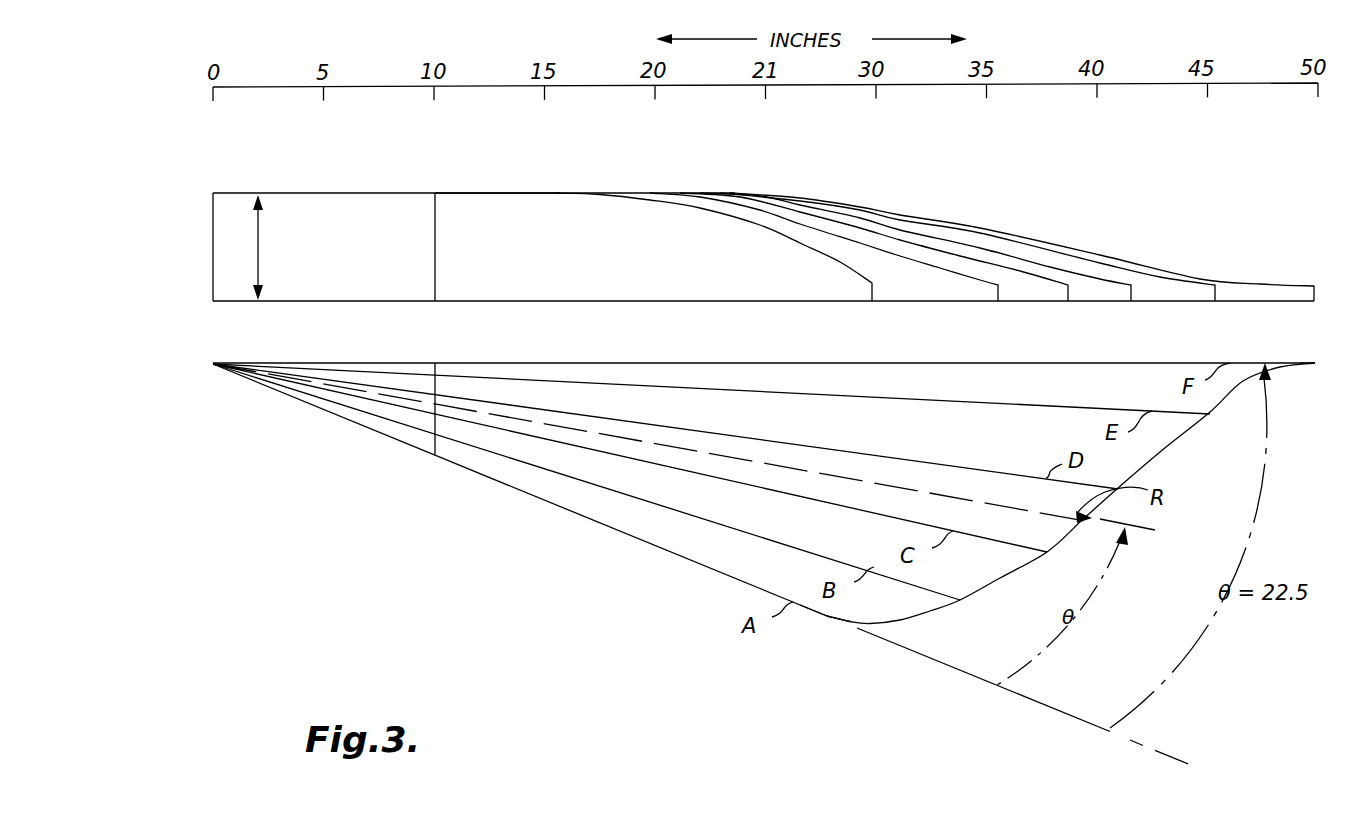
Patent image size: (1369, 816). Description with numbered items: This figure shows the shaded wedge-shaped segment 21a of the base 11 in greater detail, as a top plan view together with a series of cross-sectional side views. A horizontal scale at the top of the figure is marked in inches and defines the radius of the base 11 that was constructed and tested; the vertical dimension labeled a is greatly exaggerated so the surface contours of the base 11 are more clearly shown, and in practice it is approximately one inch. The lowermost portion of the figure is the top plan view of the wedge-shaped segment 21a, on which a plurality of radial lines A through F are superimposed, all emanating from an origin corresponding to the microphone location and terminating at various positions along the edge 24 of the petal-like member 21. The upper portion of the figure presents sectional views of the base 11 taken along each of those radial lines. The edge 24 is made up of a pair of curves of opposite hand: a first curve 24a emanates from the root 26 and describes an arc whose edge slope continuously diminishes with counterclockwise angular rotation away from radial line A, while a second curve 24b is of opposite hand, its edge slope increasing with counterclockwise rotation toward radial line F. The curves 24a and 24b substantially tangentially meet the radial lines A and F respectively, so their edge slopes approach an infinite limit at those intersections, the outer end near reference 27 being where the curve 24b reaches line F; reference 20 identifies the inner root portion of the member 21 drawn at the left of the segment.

The base 11 is at (290, 178).
The root portion 20 is at (340, 193).
The petal-like member 21 is at (522, 193).
The wedge-shaped segment 21a is at (632, 572).
The edge 24 is at (1160, 463).
The first curve 24a is at (915, 621).
The second curve 24b is at (1200, 418).
The root 26 is at (820, 622).
The tip end point 27 is at (1310, 362).